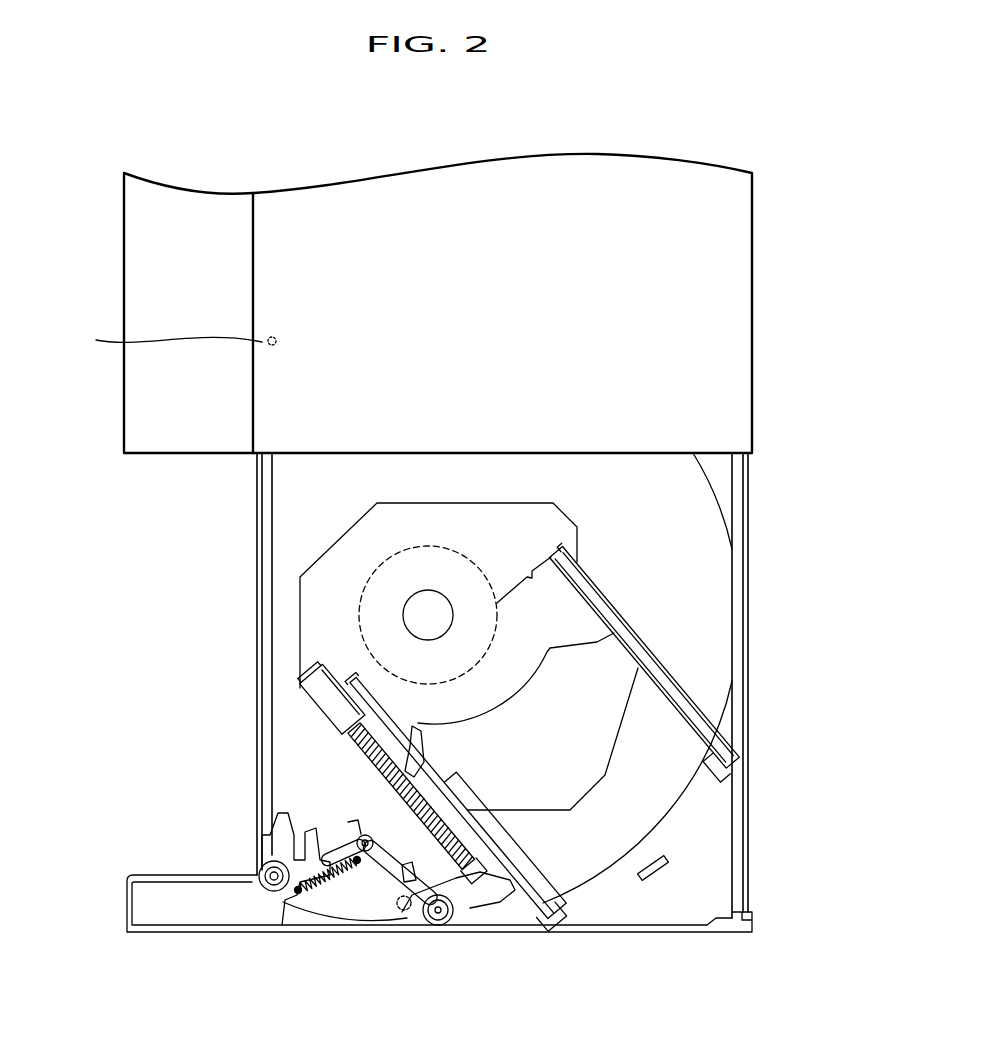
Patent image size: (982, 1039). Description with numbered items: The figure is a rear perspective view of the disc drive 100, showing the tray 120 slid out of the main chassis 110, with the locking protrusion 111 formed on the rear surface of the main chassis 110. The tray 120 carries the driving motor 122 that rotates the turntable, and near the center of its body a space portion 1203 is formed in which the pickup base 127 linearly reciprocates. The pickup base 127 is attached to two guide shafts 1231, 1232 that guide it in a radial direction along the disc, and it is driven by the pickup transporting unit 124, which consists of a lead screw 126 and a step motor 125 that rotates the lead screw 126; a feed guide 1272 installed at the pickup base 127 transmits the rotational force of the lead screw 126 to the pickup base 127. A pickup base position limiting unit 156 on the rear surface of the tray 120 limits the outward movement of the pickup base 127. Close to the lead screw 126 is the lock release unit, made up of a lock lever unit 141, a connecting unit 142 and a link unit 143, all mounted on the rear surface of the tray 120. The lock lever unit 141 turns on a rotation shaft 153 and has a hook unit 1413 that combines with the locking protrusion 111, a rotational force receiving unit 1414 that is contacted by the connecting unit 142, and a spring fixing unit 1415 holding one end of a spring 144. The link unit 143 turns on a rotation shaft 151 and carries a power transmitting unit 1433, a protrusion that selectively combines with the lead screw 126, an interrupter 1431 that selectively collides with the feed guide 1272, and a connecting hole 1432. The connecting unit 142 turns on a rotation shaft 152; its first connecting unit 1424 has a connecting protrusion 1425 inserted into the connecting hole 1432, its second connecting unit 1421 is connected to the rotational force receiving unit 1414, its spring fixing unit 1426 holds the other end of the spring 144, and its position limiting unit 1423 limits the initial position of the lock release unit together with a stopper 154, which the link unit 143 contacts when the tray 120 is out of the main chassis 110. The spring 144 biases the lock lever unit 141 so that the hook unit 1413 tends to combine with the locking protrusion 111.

The disc drive 100 is at (236, 137).
The main chassis 110 is at (760, 325).
The locking protrusion 111 is at (167, 340).
The tray 120 is at (252, 556).
The driving motor 122 is at (486, 622).
The space portion 1203 is at (463, 709).
The pickup transporting unit 124 is at (197, 669).
The step motor 125 is at (298, 690).
The lead screw 126 is at (352, 742).
The pickup base 127 is at (588, 795).
The guide shaft 1231 is at (705, 707).
The guide shaft 1232 is at (503, 852).
The feed guide 1272 is at (414, 728).
The power transmitting unit 1433 is at (445, 868).
The lock lever unit 141 is at (256, 897).
The hook unit 1413 is at (272, 830).
The rotational force receiving unit 1414 is at (313, 900).
The spring fixing unit 1415 is at (297, 898).
The connecting unit 142 is at (333, 826).
The second connecting unit 1421 is at (336, 826).
The position limiting unit 1423 is at (350, 820).
The first connecting unit 1424 is at (358, 880).
The connecting protrusion 1425 is at (405, 875).
The spring fixing unit 1426 is at (383, 888).
The link unit 143 is at (467, 917).
The interrupter 1431 is at (500, 905).
The connecting hole 1432 is at (410, 905).
The spring 144 is at (328, 892).
The rotation shaft 151 is at (452, 922).
The rotation shaft 152 is at (363, 836).
The rotation shaft 153 is at (266, 870).
The stopper 154 is at (410, 925).
The pickup base position limiting unit 156 is at (653, 880).